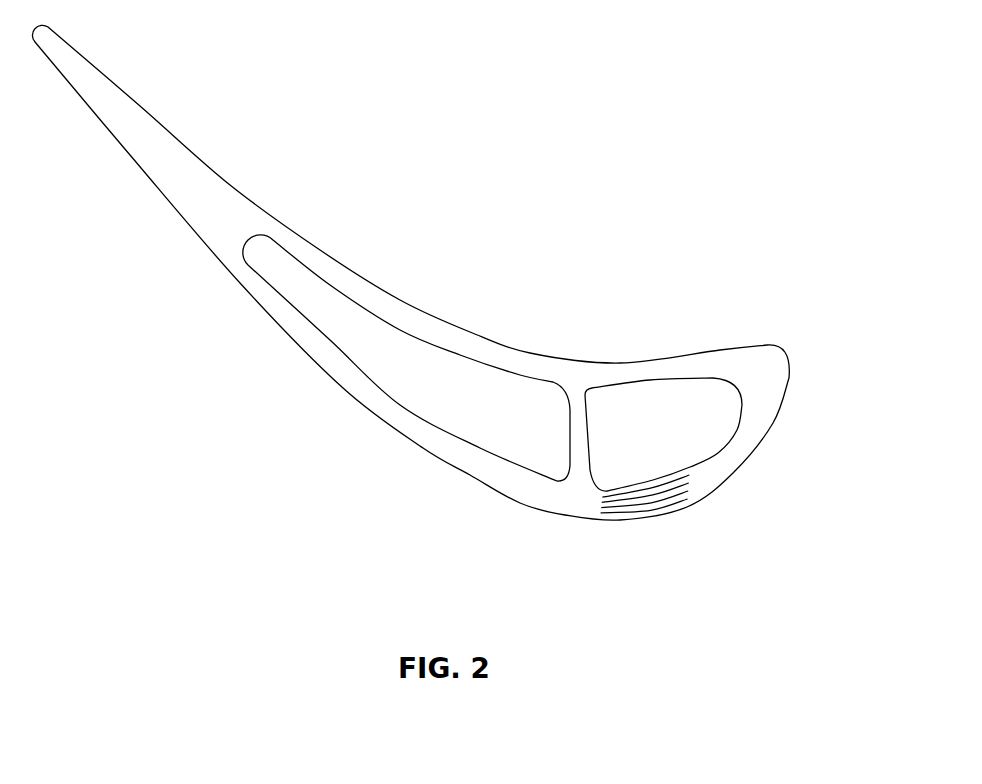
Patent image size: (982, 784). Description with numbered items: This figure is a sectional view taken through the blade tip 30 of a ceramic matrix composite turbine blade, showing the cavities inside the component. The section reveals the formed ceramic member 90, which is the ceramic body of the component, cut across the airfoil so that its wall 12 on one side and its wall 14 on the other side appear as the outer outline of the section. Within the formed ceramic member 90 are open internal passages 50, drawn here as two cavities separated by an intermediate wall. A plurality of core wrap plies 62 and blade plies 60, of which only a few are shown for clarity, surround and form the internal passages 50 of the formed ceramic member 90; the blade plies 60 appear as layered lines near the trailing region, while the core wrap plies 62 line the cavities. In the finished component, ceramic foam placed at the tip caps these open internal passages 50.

The airfoil pressure side wall 12 is at (387, 292).
The airfoil suction side wall 14 is at (343, 388).
The blade tip 30 is at (248, 218).
The internal passages 50 is at (453, 400).
The blade plies 60 is at (670, 507).
The core wrap plies 62 is at (380, 315).
The formed ceramic member 90 is at (793, 372).